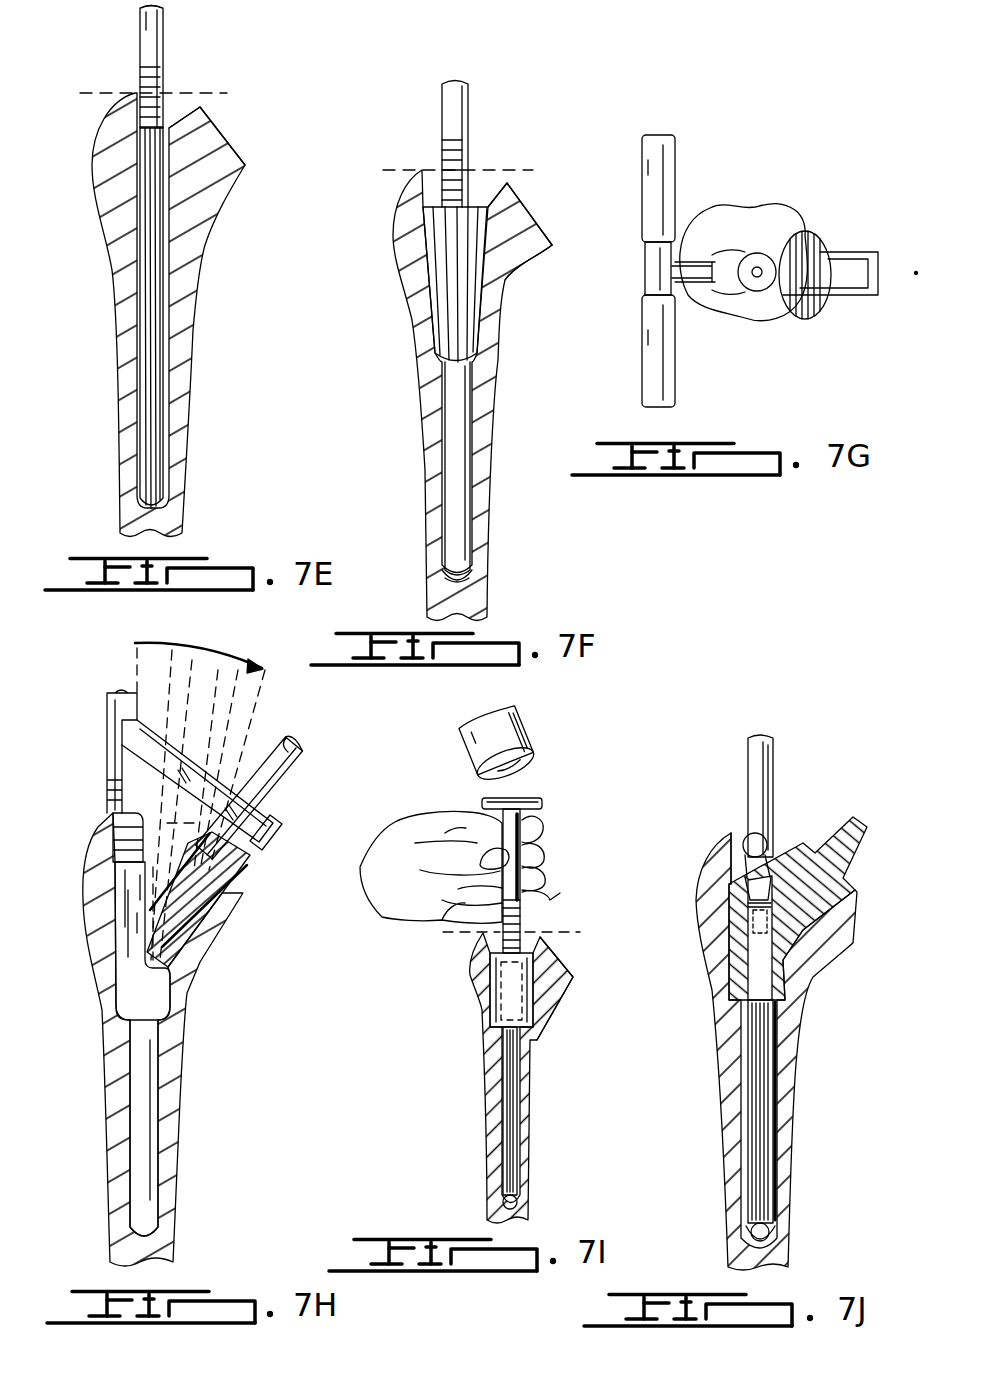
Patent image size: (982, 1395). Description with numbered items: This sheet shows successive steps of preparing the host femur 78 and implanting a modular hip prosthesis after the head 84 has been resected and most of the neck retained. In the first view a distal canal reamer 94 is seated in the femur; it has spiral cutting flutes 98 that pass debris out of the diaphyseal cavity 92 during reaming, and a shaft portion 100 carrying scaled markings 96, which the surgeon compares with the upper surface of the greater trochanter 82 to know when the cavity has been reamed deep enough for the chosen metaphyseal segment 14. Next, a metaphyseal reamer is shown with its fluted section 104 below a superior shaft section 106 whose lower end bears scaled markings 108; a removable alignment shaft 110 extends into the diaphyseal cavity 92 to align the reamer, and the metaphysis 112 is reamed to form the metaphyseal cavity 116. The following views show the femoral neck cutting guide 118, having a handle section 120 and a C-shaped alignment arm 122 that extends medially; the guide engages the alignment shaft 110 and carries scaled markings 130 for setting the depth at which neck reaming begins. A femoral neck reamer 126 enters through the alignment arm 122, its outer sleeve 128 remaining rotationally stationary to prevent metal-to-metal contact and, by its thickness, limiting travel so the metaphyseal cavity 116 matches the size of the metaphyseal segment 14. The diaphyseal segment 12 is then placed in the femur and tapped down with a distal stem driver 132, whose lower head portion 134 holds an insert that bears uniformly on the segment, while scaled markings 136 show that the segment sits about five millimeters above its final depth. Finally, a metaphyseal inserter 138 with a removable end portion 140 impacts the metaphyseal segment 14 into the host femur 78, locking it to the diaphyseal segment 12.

In FIG. 7I, the diaphyseal segment 12 is at (500, 1067).
In FIG. 7J, the diaphyseal segment 12 is at (757, 1078).
In FIG. 7H, the metaphyseal segment 14 is at (198, 899).
In FIG. 7J, the metaphyseal segment 14 is at (740, 900).
In FIG. 7E, the host femur 78 is at (115, 320).
In FIG. 7F, the host femur 78 is at (420, 393).
In FIG. 7G, the host femur 78 is at (778, 208).
In FIG. 7H, the host femur 78 is at (163, 1039).
In FIG. 7I, the host femur 78 is at (521, 1078).
In FIG. 7J, the host femur 78 is at (776, 1051).
In FIG. 7E, the greater trochanter 82 is at (135, 93).
In FIG. 7F, the greater trochanter 82 is at (422, 170).
In FIG. 7J, the greater trochanter 82 is at (730, 836).
In FIG. 7E, the head 84 is at (225, 128).
In FIG. 7F, the head 84 is at (530, 215).
In FIG. 7F, the diaphyseal cavity 92 is at (472, 577).
In FIG. 7I, the diaphyseal cavity 92 is at (492, 1202).
In FIG. 7J, the diaphyseal cavity 92 is at (777, 1235).
In FIG. 7E, the distal canal reamer 94 is at (143, 247).
In FIG. 7E, the scaled markings 96 is at (162, 78).
In FIG. 7E, the shaft portion 100 is at (148, 33).
In FIG. 7E, the spiral cutting flutes 98 is at (143, 368).
In FIG. 7F, the fluted section 104 is at (445, 268).
In FIG. 7F, the superior shaft section 106 is at (450, 105).
In FIG. 7F, the scaled markings 108 is at (442, 157).
In FIG. 7F, the removable alignment shaft 110 is at (455, 450).
In FIG. 7H, the removable alignment shaft 110 is at (140, 1127).
In FIG. 7F, the metaphysis 112 is at (508, 265).
In FIG. 7I, the metaphyseal cavity 116 is at (545, 950).
In FIG. 7G, the femoral neck cutting guide 118 is at (638, 258).
In FIG. 7H, the femoral neck cutting guide 118 is at (107, 740).
In FIG. 7G, the handle section 120 is at (665, 362).
In FIG. 7G, the C-shaped alignment arm 122 is at (848, 300).
In FIG. 7H, the C-shaped alignment arm 122 is at (275, 832).
In FIG. 7H, the femoral neck reamer 126 is at (270, 792).
In FIG. 7H, the outer sleeve 128 is at (322, 769).
In FIG. 7H, the scaled markings 130 is at (115, 820).
In FIG. 7I, the distal stem driver 132 is at (520, 900).
In FIG. 7I, the lower head portion 134 is at (495, 968).
In FIG. 7I, the scaled markings 136 is at (483, 946).
In FIG. 7J, the metaphyseal inserter 138 is at (760, 762).
In FIG. 7J, the end portion 140 is at (745, 845).